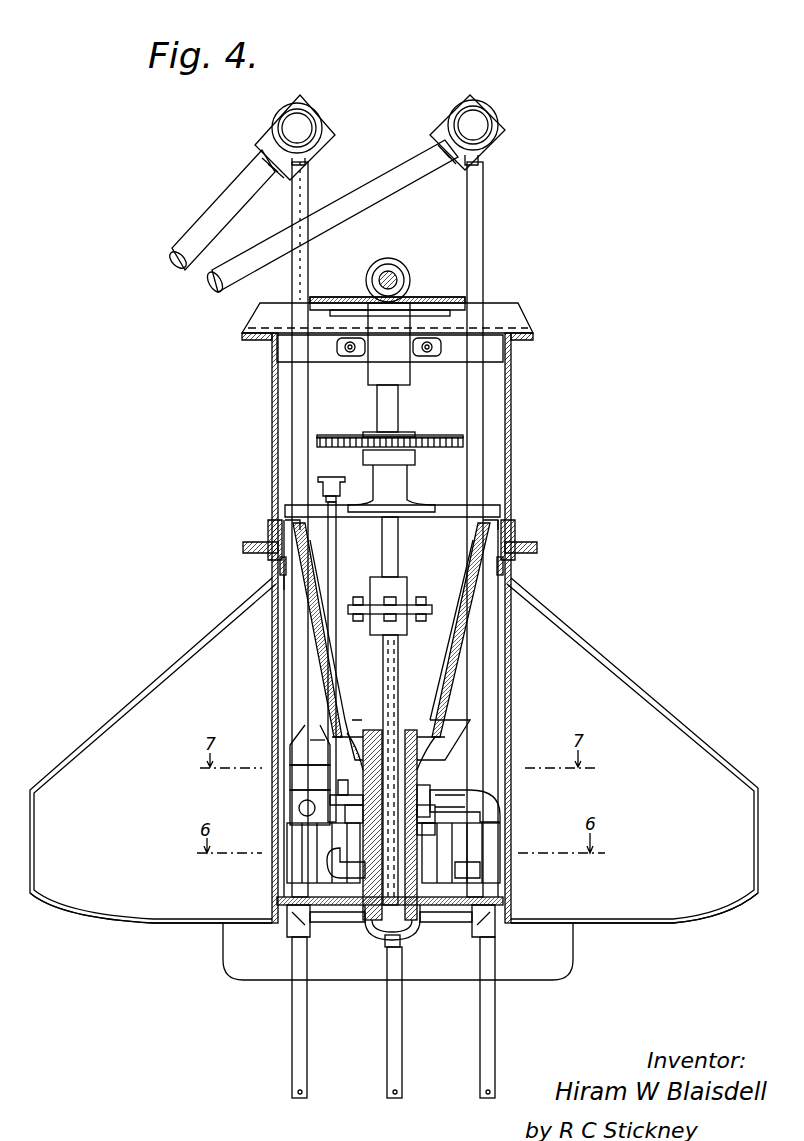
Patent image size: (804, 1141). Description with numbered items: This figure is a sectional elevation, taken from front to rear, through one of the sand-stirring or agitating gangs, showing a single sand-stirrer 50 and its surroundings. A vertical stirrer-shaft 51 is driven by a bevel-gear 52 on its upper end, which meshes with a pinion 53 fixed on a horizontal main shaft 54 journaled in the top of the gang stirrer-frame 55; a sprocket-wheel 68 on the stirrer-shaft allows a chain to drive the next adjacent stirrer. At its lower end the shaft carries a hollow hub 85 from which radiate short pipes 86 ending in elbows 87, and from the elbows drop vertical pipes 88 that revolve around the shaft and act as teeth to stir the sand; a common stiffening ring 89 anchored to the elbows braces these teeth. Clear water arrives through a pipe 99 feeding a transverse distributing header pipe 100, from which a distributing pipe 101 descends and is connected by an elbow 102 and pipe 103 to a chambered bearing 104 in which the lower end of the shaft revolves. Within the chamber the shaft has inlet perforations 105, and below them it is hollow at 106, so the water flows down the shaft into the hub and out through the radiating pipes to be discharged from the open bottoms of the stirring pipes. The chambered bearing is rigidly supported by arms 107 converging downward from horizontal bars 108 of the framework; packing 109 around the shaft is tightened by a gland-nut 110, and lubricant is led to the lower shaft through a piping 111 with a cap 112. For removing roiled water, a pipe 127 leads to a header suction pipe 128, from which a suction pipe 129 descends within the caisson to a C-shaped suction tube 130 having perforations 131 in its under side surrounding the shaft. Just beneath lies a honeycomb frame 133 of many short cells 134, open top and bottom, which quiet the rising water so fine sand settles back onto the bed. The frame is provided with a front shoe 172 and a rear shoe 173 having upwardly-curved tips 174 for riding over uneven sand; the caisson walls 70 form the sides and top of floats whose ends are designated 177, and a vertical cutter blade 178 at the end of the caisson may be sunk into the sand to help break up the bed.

The sand-stirrer 50 is at (512, 1060).
The vertical stirrer-shaft 51 is at (405, 690).
The bevel-gear 52 is at (428, 300).
The pinion 53 is at (368, 278).
The horizontal main shaft 54 is at (392, 274).
The gang stirrer-frame 55 is at (532, 322).
The sprocket-wheel 68 is at (428, 434).
The caisson wall 70 is at (185, 655).
The hollow hub 85 is at (375, 935).
The radiating pipe 86 is at (340, 922).
The elbow 87 is at (290, 930).
The vertical stirring pipe 88 is at (307, 1012).
The stiffening ring 89 is at (504, 896).
The water supply pipe 99 is at (405, 158).
The distributing header pipe 100 is at (495, 132).
The distributing pipe 101 is at (484, 272).
The elbow 102 is at (448, 796).
The pipe 103 is at (472, 798).
The chambered bearing 104 is at (368, 732).
The inlet perforation 105 is at (300, 806).
The hollow shaft portion 106 is at (405, 938).
The supporting arm 107 is at (325, 582).
The horizontal bar 108 is at (268, 536).
The packing 109 is at (330, 866).
The gland-nut 110 is at (445, 738).
The lubricating piping 111 is at (305, 762).
The cap 112 is at (330, 476).
The suction pipe 127 is at (198, 202).
The header suction pipe 128 is at (280, 118).
The suction pipe 129 is at (308, 188).
The C-shaped suction tube 130 is at (355, 822).
The perforation 131 is at (345, 812).
The honeycomb frame 133 is at (338, 882).
The cell 134 is at (480, 842).
The front shoe 172 is at (600, 925).
The rear shoe 173 is at (185, 925).
The upwardly-curved tip 174 is at (40, 915).
The float end 177 is at (383, 812).
The cutter blade 178 is at (528, 982).